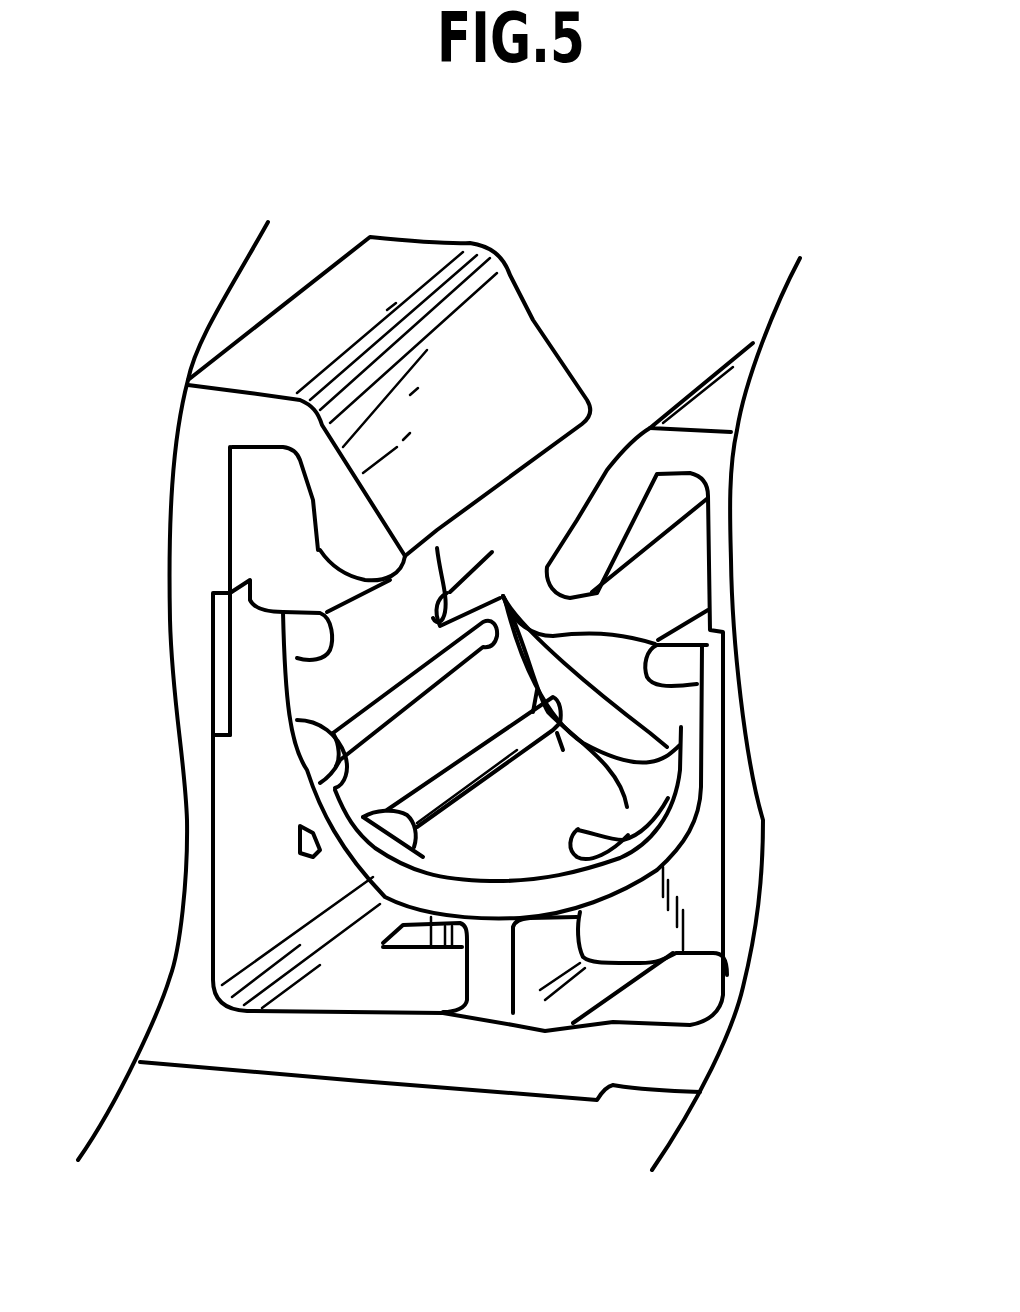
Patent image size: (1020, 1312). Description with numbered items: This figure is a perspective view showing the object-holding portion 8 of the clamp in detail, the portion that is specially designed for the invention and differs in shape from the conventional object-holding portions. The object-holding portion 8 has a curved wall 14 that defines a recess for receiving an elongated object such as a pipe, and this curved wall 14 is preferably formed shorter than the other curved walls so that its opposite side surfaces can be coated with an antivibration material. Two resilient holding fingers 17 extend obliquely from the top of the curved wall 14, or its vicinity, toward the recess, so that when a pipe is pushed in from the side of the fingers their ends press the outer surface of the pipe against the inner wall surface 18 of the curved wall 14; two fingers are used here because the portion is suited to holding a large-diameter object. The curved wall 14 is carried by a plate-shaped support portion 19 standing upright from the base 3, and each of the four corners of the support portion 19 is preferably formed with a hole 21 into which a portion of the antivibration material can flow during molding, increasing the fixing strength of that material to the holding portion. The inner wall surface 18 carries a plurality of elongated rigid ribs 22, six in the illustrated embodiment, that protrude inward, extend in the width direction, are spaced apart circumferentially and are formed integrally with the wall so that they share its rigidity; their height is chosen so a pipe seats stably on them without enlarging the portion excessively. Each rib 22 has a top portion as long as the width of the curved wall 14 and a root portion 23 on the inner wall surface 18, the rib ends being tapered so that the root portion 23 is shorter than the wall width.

The base 3 is at (663, 1067).
The object-holding portion 8 is at (652, 300).
The curved wall 14 is at (287, 758).
The resilient holding finger 17 is at (535, 337).
The inner wall surface 18 is at (297, 702).
The support portion 19 is at (383, 945).
The hole 21 is at (317, 858).
The rib 22 is at (503, 588).
The root portion 23 is at (287, 613).